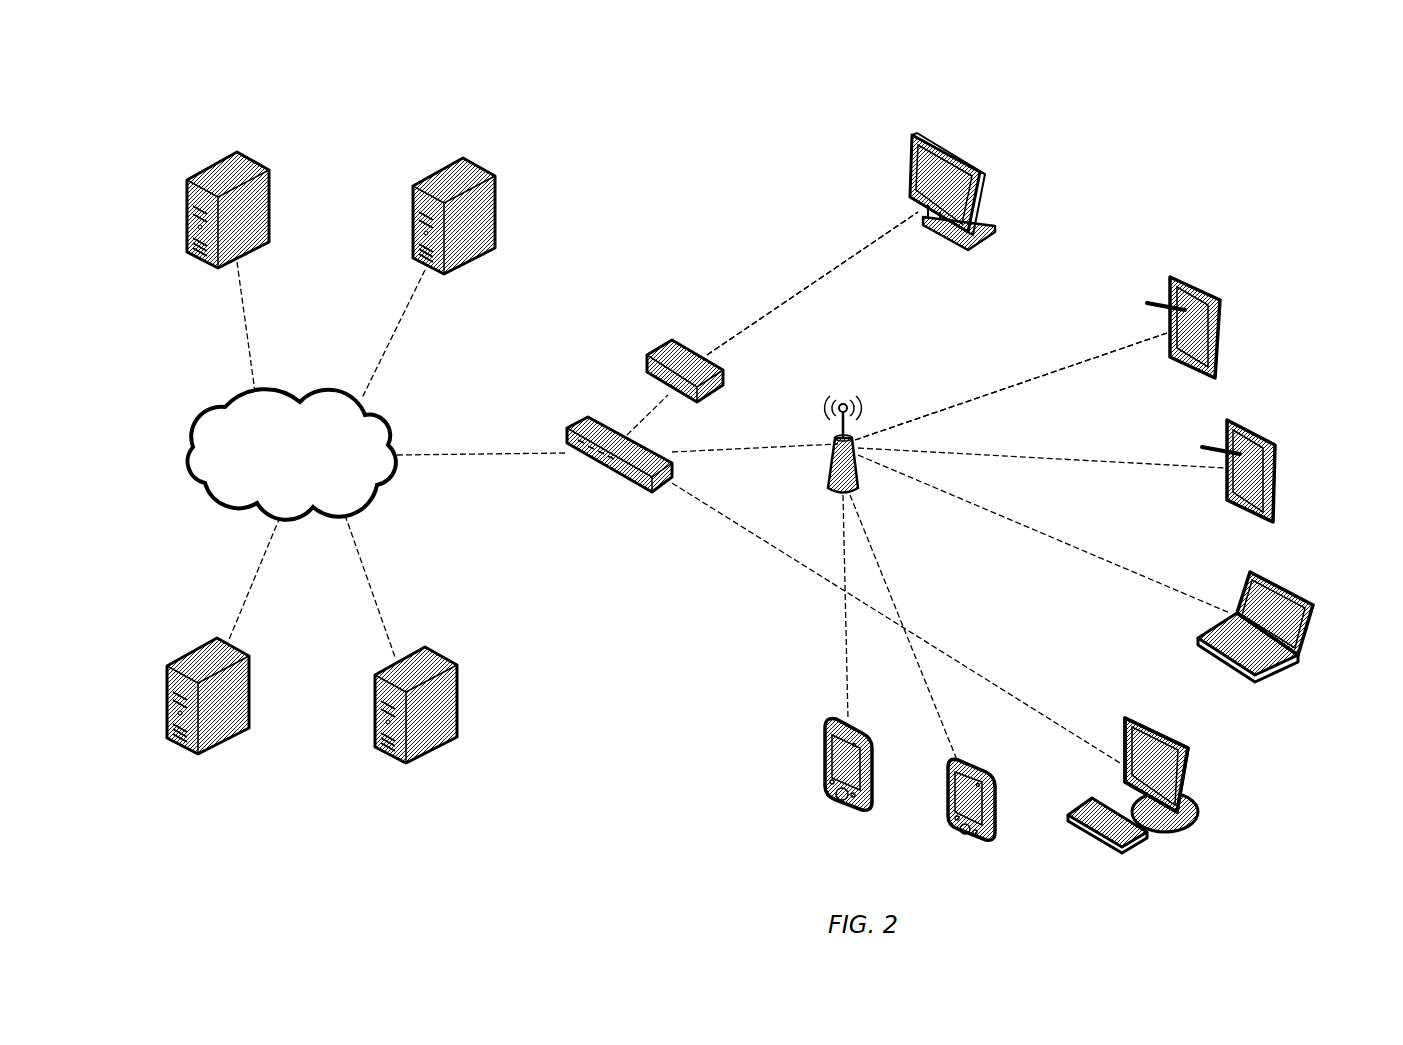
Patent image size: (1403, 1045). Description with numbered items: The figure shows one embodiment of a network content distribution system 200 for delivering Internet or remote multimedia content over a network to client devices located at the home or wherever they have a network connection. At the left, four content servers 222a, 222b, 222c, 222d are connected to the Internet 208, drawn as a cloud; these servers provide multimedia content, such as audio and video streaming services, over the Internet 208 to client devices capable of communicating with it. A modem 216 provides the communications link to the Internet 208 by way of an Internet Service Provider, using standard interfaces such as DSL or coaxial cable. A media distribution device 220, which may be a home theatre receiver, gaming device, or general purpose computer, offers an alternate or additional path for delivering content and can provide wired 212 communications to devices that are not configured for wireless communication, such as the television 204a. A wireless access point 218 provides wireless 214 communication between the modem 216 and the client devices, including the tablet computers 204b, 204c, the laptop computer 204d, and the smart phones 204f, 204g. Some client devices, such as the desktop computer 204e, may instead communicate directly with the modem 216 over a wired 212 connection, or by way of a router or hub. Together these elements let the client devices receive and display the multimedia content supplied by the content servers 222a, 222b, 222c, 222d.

The network content distribution system 200 is at (318, 80).
The Internet 208 is at (243, 392).
The wired connection 212 is at (840, 268).
The wireless communication 214 is at (1050, 372).
The modem 216 is at (652, 495).
The wireless access point 218 is at (845, 397).
The media distribution device 220 is at (673, 340).
The content server 222a is at (237, 150).
The content server 222b is at (462, 157).
The content server 222c is at (207, 640).
The content server 222d is at (387, 668).
The television 204a is at (980, 160).
The tablet computer 204b is at (1198, 283).
The tablet computer 204c is at (1270, 430).
The laptop computer 204d is at (1298, 593).
The desktop computer 204e is at (1190, 747).
The smart phone 204f is at (983, 843).
The smart phone 204g is at (842, 807).